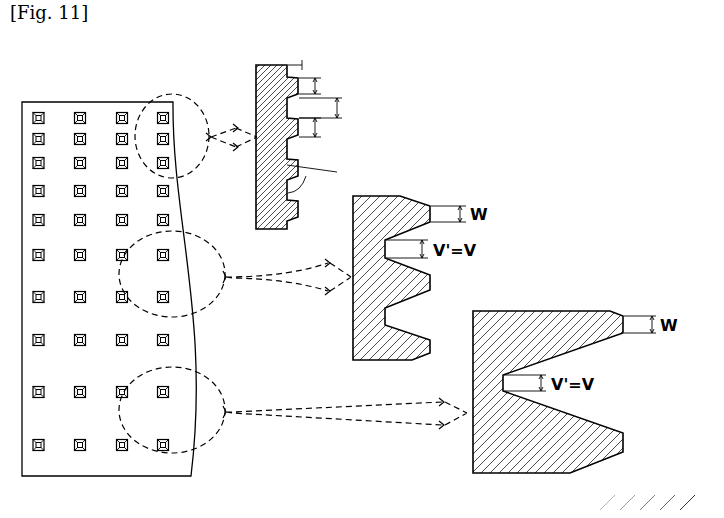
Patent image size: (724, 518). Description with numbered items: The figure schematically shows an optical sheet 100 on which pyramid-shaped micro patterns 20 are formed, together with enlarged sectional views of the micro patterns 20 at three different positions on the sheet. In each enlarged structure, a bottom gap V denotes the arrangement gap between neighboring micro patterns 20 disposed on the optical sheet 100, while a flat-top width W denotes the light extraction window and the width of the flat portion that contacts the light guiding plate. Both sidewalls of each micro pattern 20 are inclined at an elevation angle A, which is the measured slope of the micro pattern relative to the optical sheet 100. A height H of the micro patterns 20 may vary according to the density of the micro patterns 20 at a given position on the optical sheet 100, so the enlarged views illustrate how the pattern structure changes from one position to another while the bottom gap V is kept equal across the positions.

The optical sheet 100 is at (126, 98).
The micro patterns 20 is at (80, 112).
The height H is at (303, 64).
The flat-top width W is at (322, 106).
The bottom gap V is at (328, 108).
The elevation angle A is at (312, 180).